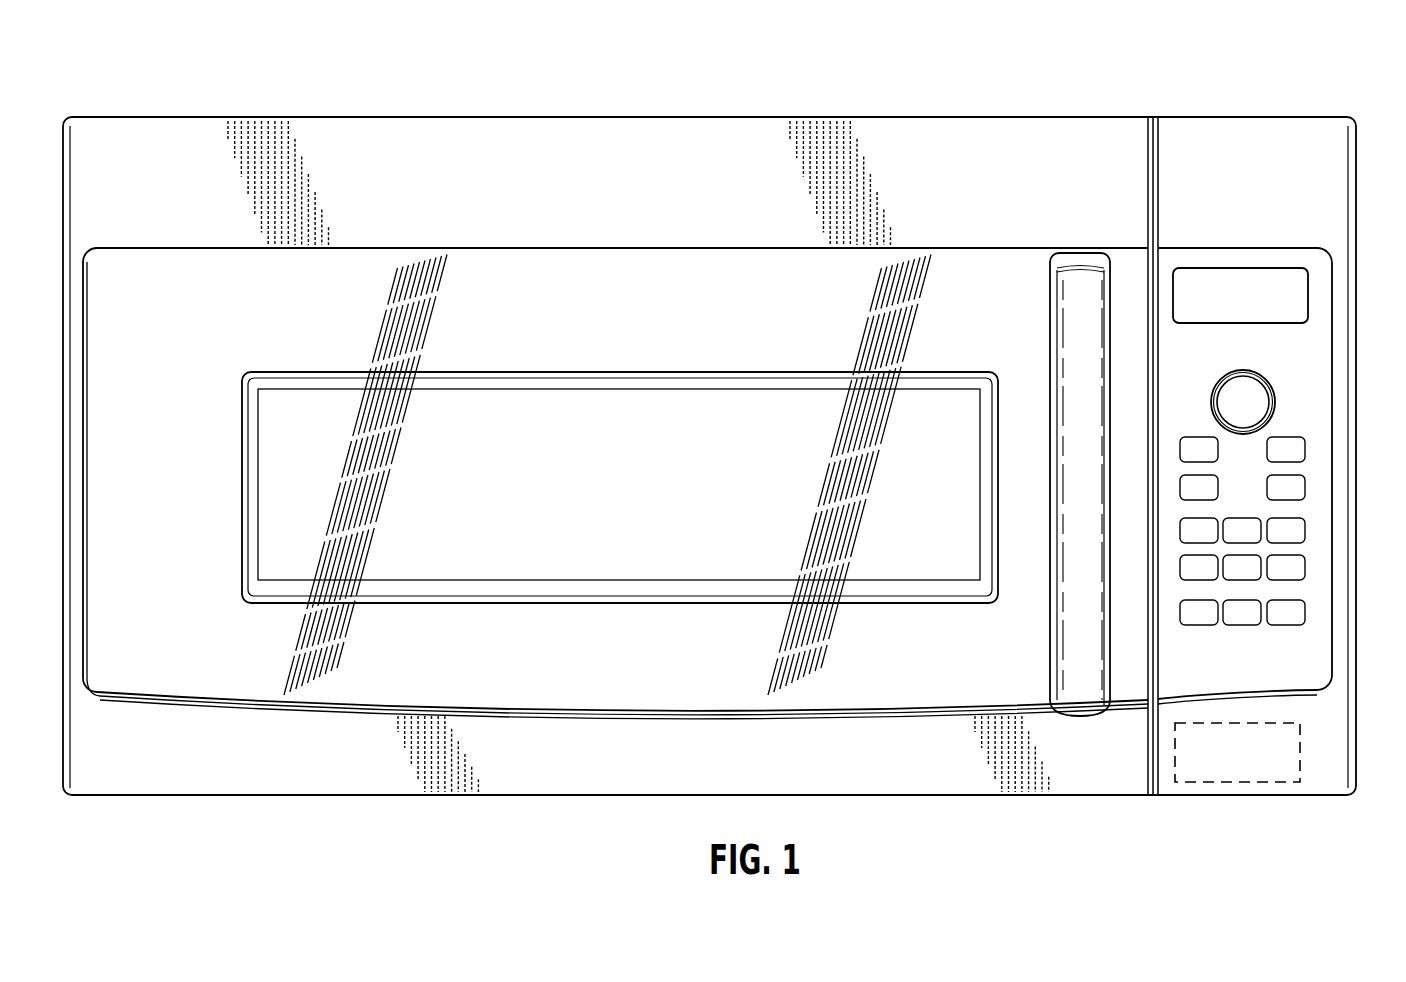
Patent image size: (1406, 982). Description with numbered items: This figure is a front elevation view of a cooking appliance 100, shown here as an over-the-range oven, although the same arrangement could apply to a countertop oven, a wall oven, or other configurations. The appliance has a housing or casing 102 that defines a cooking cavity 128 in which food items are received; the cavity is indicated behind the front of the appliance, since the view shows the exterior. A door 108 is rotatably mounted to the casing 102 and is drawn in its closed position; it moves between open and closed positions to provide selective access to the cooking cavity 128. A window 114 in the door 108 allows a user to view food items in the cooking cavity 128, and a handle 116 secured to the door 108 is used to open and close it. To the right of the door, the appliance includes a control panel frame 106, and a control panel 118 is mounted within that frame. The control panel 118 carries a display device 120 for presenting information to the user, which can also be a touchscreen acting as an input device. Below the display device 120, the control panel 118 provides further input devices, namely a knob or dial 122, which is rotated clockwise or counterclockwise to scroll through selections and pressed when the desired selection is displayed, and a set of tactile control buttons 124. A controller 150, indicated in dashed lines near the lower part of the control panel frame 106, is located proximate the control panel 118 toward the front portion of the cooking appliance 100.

The cooking appliance 100 is at (148, 97).
The casing 102 is at (1150, 116).
The control panel frame 106 is at (1322, 778).
The door 108 is at (332, 765).
The window 114 is at (501, 575).
The handle 116 is at (1075, 627).
The control panel 118 is at (1312, 352).
The display device 120 is at (1310, 288).
The dial 122 is at (1277, 404).
The tactile control buttons 124 is at (1302, 606).
The cooking cavity 128 is at (478, 176).
The controller 150 is at (1222, 786).